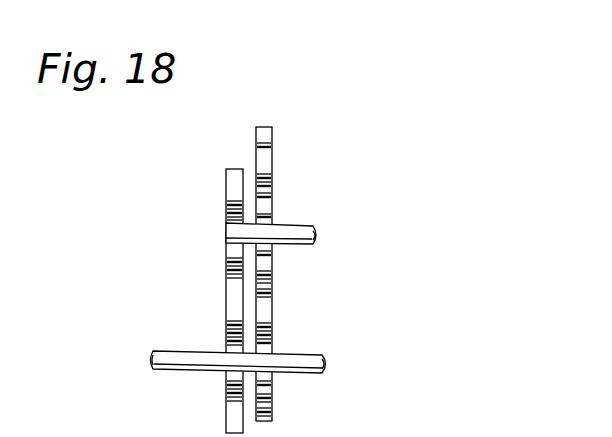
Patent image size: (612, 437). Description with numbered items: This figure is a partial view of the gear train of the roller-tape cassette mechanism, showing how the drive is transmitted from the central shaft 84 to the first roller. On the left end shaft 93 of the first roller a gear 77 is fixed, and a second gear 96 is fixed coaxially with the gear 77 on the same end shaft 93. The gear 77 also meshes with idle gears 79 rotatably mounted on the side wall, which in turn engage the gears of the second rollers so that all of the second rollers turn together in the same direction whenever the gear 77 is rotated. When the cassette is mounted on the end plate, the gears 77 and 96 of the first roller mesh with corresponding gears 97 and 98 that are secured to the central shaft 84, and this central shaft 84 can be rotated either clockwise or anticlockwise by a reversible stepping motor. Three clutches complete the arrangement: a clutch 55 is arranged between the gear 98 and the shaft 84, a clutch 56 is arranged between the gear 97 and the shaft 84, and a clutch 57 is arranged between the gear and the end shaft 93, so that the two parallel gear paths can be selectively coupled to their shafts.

The gear 96 is at (232, 195).
The gear 98 is at (233, 318).
The clutch 55 is at (230, 373).
The gear 77 is at (265, 177).
The idle gear 79 is at (273, 134).
The clutch 57 is at (266, 214).
The gear 97 is at (265, 318).
The clutch 56 is at (262, 349).
The end shaft 93 is at (302, 243).
The central shaft 84 is at (312, 363).